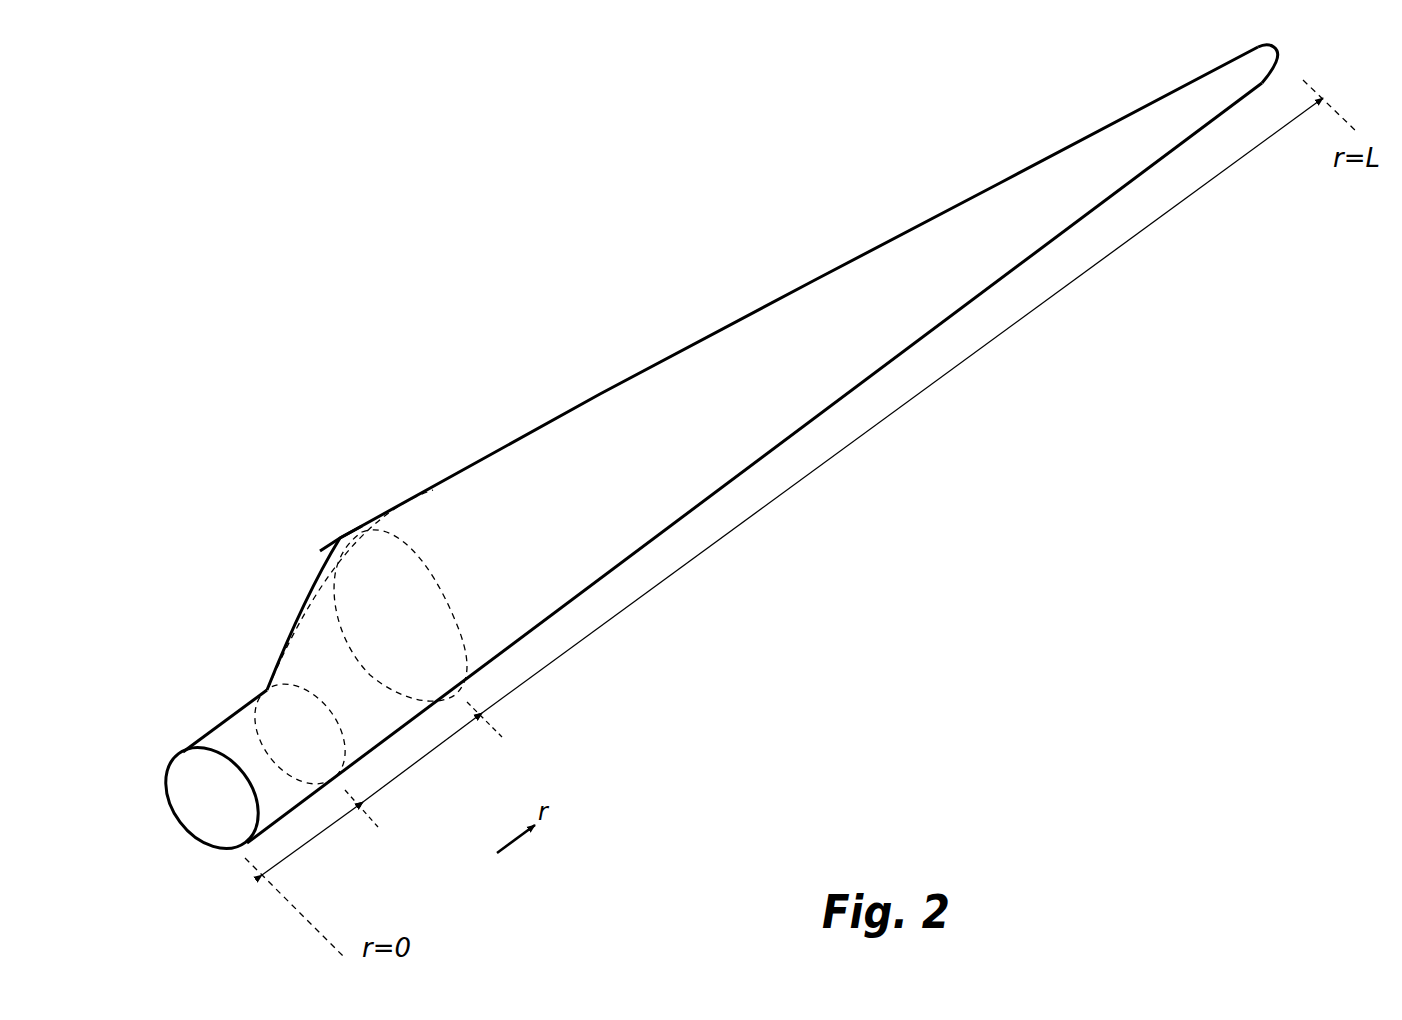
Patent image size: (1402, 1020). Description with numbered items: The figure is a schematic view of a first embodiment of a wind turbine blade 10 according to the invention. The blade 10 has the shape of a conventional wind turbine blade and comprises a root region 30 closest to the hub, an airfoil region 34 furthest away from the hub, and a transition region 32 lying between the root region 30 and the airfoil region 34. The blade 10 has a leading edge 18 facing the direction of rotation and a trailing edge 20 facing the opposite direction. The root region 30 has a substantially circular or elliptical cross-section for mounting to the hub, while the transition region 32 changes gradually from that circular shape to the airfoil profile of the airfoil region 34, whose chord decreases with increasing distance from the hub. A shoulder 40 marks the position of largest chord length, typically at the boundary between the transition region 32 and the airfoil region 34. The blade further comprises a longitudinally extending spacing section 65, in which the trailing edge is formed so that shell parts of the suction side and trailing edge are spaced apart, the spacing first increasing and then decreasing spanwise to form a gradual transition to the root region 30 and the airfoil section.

The wind turbine blade 10 is at (752, 501).
The leading edge 18 is at (940, 327).
The trailing edge 20 is at (813, 280).
The root region 30 is at (315, 842).
The transition region 32 is at (393, 646).
The airfoil region 34 is at (817, 470).
The shoulder 40 is at (338, 538).
The spacing section 65 is at (308, 602).